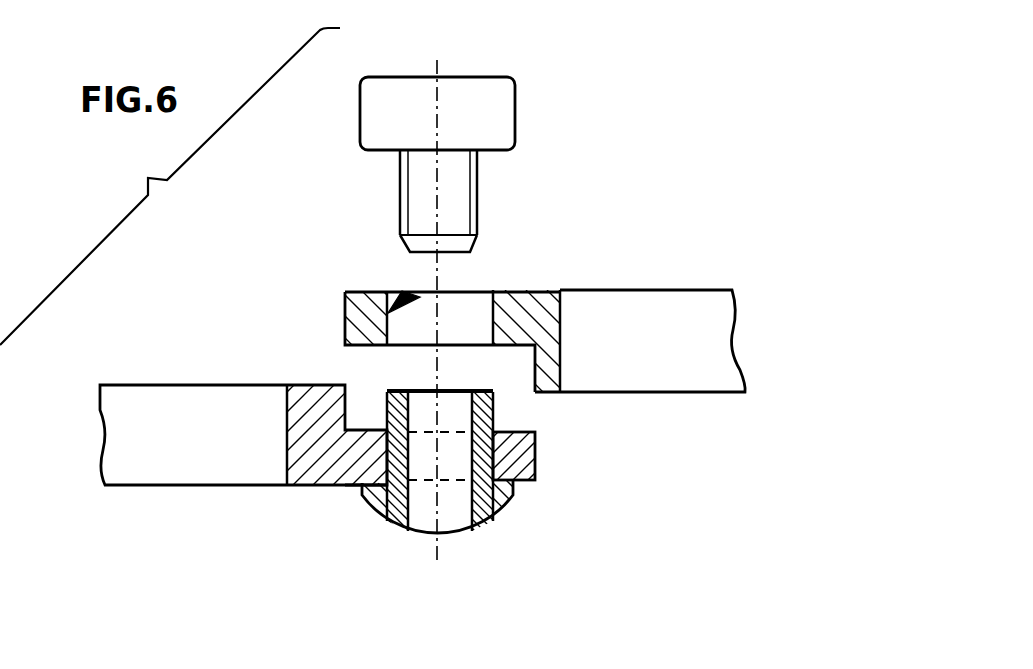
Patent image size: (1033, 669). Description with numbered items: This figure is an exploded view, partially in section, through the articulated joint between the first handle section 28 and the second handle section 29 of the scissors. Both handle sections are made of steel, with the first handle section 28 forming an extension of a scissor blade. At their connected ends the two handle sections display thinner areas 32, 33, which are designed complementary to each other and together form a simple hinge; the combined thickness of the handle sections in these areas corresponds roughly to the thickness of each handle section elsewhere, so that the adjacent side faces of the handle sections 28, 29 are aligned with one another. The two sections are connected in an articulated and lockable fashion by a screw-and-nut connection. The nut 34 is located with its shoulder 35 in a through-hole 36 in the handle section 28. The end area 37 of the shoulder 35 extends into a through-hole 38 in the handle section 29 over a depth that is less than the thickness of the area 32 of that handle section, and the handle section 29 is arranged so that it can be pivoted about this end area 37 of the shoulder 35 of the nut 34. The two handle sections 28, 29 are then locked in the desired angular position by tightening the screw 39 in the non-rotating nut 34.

The first handle section 28 is at (192, 385).
The second handle section 29 is at (637, 289).
The thinner area 32 is at (522, 290).
The thinner area 33 is at (537, 467).
The nut 34 is at (512, 502).
The shoulder 35 is at (535, 438).
The through-hole 36 is at (360, 485).
The end area 37 is at (493, 405).
The through-hole 38 is at (402, 292).
The screw 39 is at (521, 100).